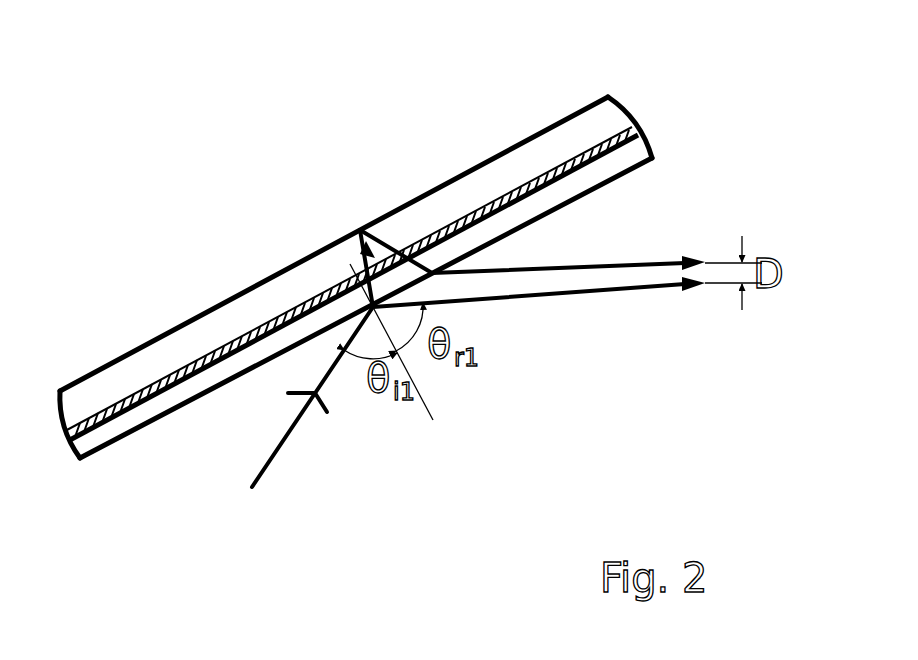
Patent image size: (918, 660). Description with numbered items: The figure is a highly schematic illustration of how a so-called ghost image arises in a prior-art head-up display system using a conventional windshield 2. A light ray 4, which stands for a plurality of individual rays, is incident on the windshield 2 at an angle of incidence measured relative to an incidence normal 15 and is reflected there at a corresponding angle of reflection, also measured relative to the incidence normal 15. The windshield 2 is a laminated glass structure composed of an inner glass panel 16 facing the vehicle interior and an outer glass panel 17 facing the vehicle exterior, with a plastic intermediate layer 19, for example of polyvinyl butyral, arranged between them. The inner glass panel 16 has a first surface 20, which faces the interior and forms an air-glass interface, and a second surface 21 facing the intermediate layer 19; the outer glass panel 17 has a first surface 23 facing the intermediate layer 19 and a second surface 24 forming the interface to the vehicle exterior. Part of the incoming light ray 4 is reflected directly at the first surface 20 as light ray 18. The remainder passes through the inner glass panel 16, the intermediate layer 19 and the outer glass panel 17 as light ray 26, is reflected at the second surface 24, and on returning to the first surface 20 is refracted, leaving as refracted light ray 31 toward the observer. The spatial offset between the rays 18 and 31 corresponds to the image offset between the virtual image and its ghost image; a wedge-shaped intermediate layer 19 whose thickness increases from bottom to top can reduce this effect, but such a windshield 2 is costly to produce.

The windshield 2 is at (423, 303).
The light ray 4 is at (297, 427).
The incidence normal 15 is at (428, 408).
The inner glass panel 16 is at (431, 367).
The outer glass panel 17 is at (334, 215).
The light ray 18 is at (590, 292).
The intermediate layer 19 is at (630, 117).
The first surface 20 is at (138, 431).
The second surface 21 is at (223, 366).
The first surface 23 is at (245, 330).
The second surface 24 is at (410, 200).
The light ray 26 is at (356, 252).
The refracted light ray 31 is at (587, 268).